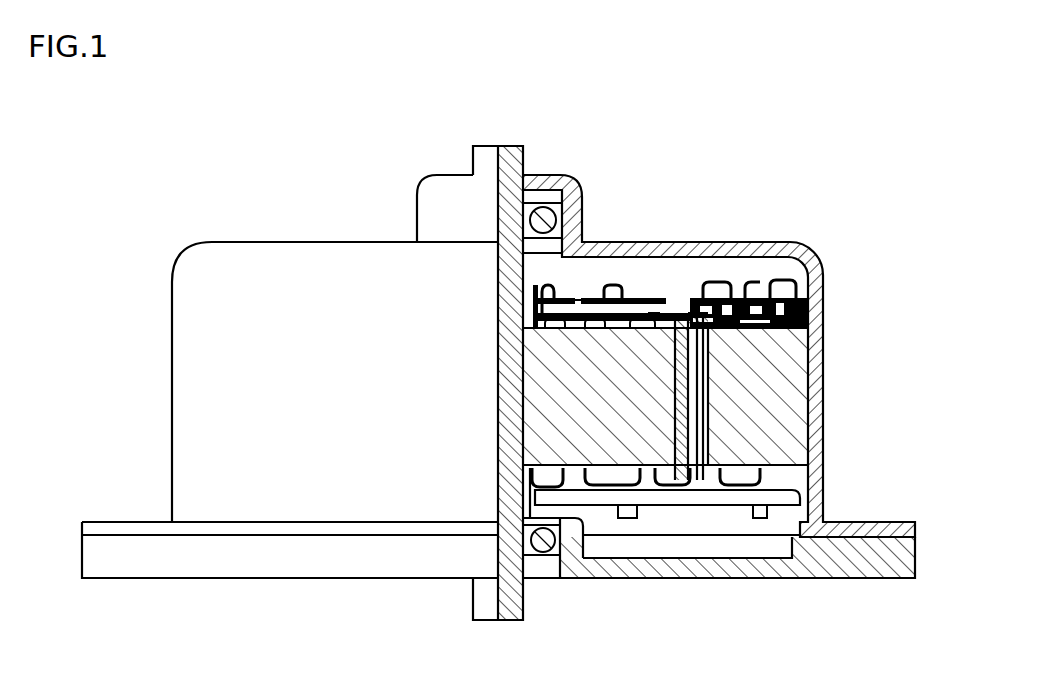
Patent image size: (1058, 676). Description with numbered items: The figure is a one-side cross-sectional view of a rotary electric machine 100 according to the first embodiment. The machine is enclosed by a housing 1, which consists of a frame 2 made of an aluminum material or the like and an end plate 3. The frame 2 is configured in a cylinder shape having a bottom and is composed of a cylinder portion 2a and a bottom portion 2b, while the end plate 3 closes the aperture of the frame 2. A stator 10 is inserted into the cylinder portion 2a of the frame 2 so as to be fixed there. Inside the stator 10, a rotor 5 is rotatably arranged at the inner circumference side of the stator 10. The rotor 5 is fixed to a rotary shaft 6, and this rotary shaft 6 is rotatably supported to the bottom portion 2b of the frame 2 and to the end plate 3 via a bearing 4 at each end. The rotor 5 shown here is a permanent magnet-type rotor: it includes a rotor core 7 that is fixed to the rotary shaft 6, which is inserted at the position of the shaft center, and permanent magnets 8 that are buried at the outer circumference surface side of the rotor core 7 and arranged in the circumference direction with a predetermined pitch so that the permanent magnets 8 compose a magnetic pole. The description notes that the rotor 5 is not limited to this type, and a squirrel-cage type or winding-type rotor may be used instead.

The rotary electric machine 100 is at (165, 208).
The housing 1 is at (107, 425).
The frame 2 is at (193, 445).
The cylinder portion 2a is at (825, 327).
The bottom portion 2b is at (740, 243).
The end plate 3 is at (161, 550).
The bearing 4 is at (545, 206).
The rotor 5 is at (713, 183).
The rotary shaft 6 is at (585, 238).
The rotor core 7 is at (603, 347).
The permanent magnets 8 is at (688, 302).
The stator 10 is at (798, 388).